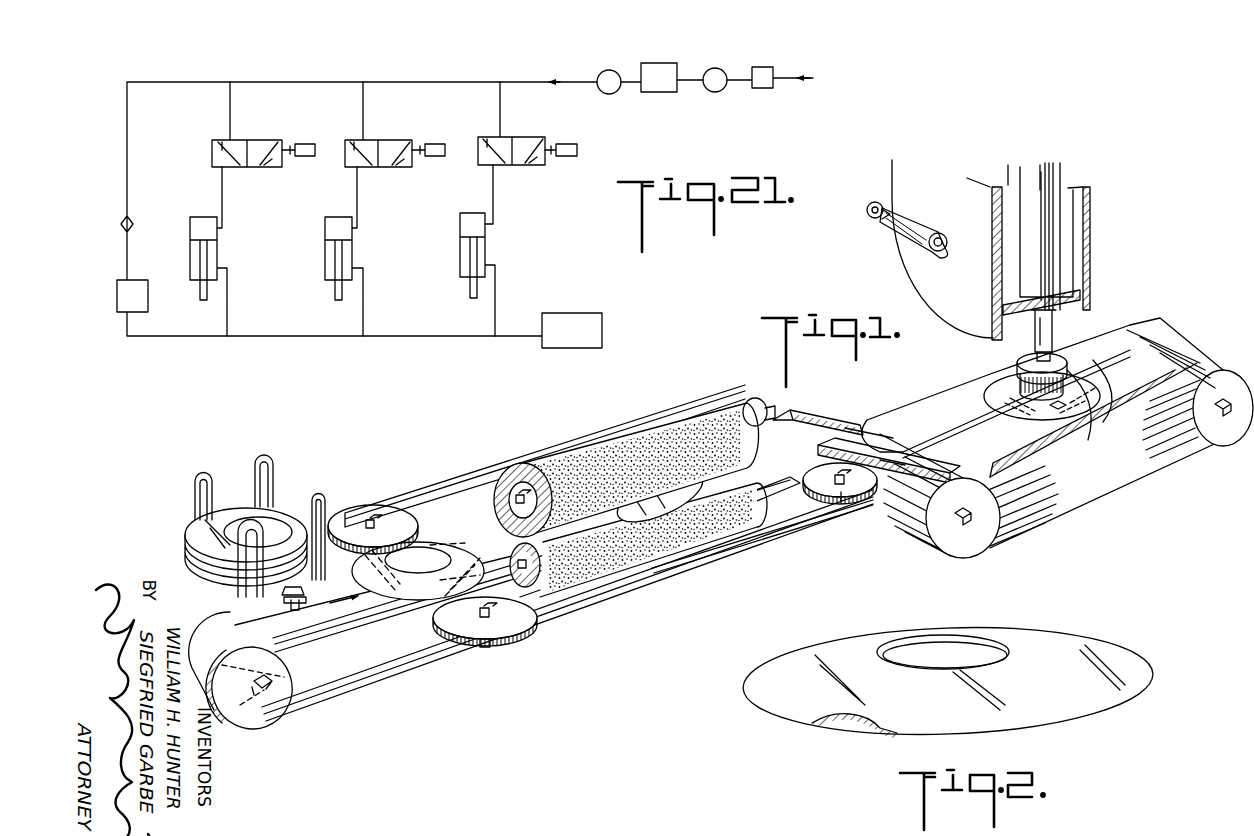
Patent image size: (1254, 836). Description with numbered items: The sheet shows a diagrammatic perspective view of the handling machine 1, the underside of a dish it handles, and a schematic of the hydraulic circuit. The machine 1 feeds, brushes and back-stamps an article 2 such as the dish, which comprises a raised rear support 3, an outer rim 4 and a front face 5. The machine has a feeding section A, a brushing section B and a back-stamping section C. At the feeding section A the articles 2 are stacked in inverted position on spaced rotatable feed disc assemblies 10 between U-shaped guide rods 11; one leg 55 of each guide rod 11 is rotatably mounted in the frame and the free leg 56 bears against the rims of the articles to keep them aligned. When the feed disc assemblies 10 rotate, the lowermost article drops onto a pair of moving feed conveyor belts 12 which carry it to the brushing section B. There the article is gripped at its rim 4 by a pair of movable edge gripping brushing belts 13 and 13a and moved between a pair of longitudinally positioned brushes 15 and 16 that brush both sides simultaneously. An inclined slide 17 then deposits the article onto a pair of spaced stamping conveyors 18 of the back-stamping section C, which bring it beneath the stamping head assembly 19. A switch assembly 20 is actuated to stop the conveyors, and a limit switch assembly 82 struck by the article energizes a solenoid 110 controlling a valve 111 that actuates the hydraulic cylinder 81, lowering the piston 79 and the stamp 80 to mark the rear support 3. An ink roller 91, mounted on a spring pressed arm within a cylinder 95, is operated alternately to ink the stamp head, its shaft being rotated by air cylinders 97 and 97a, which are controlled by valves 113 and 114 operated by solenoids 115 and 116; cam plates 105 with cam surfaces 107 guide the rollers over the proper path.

In FIG. 1, the handling machine 1 is at (644, 408).
In FIG. 1, the article 2 is at (288, 522).
In FIG. 2, the article 2 is at (1158, 665).
In FIG. 1, the raised rear support 3 is at (190, 530).
In FIG. 2, the raised rear support 3 is at (988, 648).
In FIG. 1, the outer rim 4 is at (186, 558).
In FIG. 2, the outer rim 4 is at (1120, 705).
In FIG. 2, the front face 5 is at (865, 730).
In FIG. 1, the rotatable feed disc assemblies 10 is at (306, 612).
In FIG. 1, the U-shaped guide rods 11 is at (196, 472).
In FIG. 1, the feed conveyor belts 12 is at (238, 622).
In FIG. 1, the edge gripping brushing belt 13 is at (424, 490).
In FIG. 1, the edge gripping brushing belt 13a is at (572, 612).
In FIG. 1, the brush 15 is at (598, 442).
In FIG. 1, the brush 16 is at (700, 540).
In FIG. 1, the inclined slide 17 is at (832, 415).
In FIG. 1, the stamping conveyors 18 is at (1160, 355).
In FIG. 1, the stamping head assembly 19 is at (1008, 360).
In FIG. 1, the switch assembly 20 is at (1050, 440).
In FIG. 1, the leg 55 is at (238, 470).
In FIG. 1, the free leg 56 is at (194, 490).
In FIG. 1, the piston 79 is at (1053, 331).
In FIG. 1, the stamp 80 is at (1012, 385).
In FIG. 21, the hydraulic cylinder 81 is at (352, 252).
In FIG. 1, the hydraulic cylinder 81 is at (1062, 177).
In FIG. 1, the limit switch assembly 82 is at (1126, 395).
In FIG. 1, the ink roller 91 is at (866, 208).
In FIG. 1, the cylinder 95 is at (883, 244).
In FIG. 21, the air cylinder 97 is at (190, 224).
In FIG. 21, the air cylinder 97a is at (460, 222).
In FIG. 1, the cam plates 105 is at (905, 284).
In FIG. 1, the cam surfaces 107 is at (930, 318).
In FIG. 21, the solenoid 110 is at (435, 140).
In FIG. 21, the valve 111 is at (392, 138).
In FIG. 21, the valve 113 is at (260, 138).
In FIG. 21, the valve 114 is at (530, 136).
In FIG. 21, the solenoid 115 is at (305, 140).
In FIG. 21, the solenoid 116 is at (583, 140).
In FIG. 1, the feeding section A is at (222, 442).
In FIG. 1, the brushing section B is at (478, 436).
In FIG. 1, the back-stamping section C is at (1152, 476).